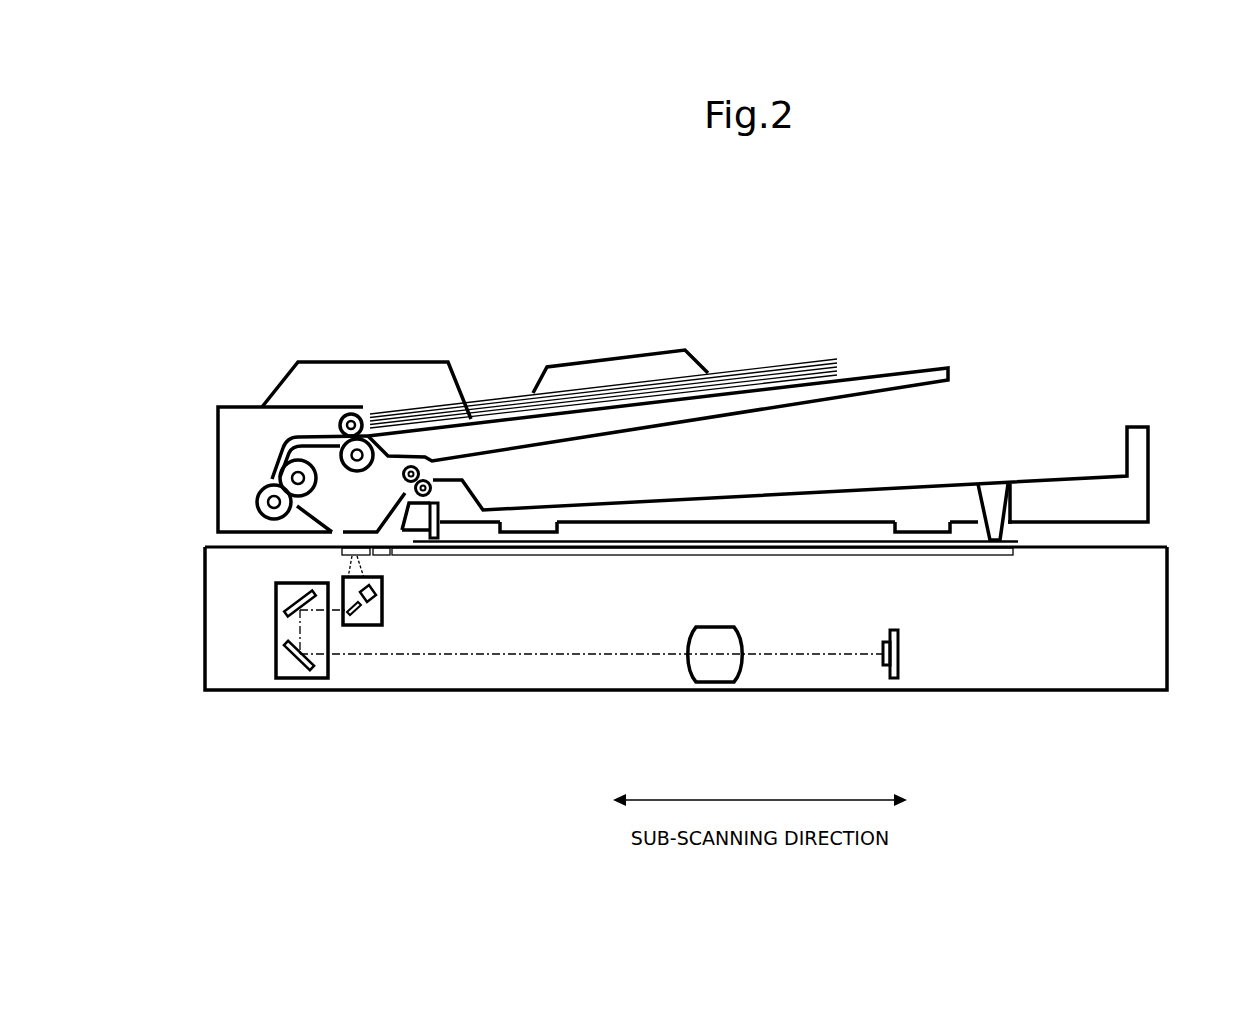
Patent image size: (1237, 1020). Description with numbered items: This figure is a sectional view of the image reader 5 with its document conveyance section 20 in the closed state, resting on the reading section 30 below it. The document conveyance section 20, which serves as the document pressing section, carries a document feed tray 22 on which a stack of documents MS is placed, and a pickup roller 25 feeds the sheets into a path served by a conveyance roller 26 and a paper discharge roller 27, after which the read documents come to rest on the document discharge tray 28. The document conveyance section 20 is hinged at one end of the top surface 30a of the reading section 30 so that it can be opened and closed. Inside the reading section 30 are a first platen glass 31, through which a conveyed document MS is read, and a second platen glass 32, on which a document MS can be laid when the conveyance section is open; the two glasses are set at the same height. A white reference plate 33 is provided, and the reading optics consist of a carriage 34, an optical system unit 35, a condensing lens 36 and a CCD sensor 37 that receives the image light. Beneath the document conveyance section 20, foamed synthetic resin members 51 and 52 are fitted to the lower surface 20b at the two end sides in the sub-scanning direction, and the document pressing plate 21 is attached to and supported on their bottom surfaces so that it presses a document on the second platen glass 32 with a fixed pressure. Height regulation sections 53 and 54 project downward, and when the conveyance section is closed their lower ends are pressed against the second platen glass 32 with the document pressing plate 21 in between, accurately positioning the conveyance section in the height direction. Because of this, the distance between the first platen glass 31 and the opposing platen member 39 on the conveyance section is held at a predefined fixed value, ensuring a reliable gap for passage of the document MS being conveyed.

The image reader 5 is at (634, 298).
The document conveyance section 20 is at (1074, 376).
The lower surface 20b is at (508, 542).
The document pressing plate 21 is at (593, 542).
The document feed tray 22 is at (906, 369).
The pickup roller 25 is at (351, 412).
The conveyance roller 26 is at (265, 488).
The paper discharge roller 27 is at (428, 474).
The document discharge tray 28 is at (950, 482).
The reading section 30 is at (1020, 718).
The top surface 30a is at (1140, 547).
The first platen glass 31 is at (343, 556).
The second platen glass 32 is at (782, 557).
The white reference plate 33 is at (370, 552).
The carriage 34 is at (362, 627).
The optical system unit 35 is at (300, 680).
The condensing lens 36 is at (717, 684).
The CCD sensor 37 is at (895, 679).
The platen member 39 is at (372, 531).
The foamed synthetic resin member 51 is at (530, 542).
The foamed synthetic resin member 52 is at (915, 537).
The height regulation section 53 is at (437, 542).
The height regulation section 54 is at (1000, 512).
The document MS is at (733, 372).